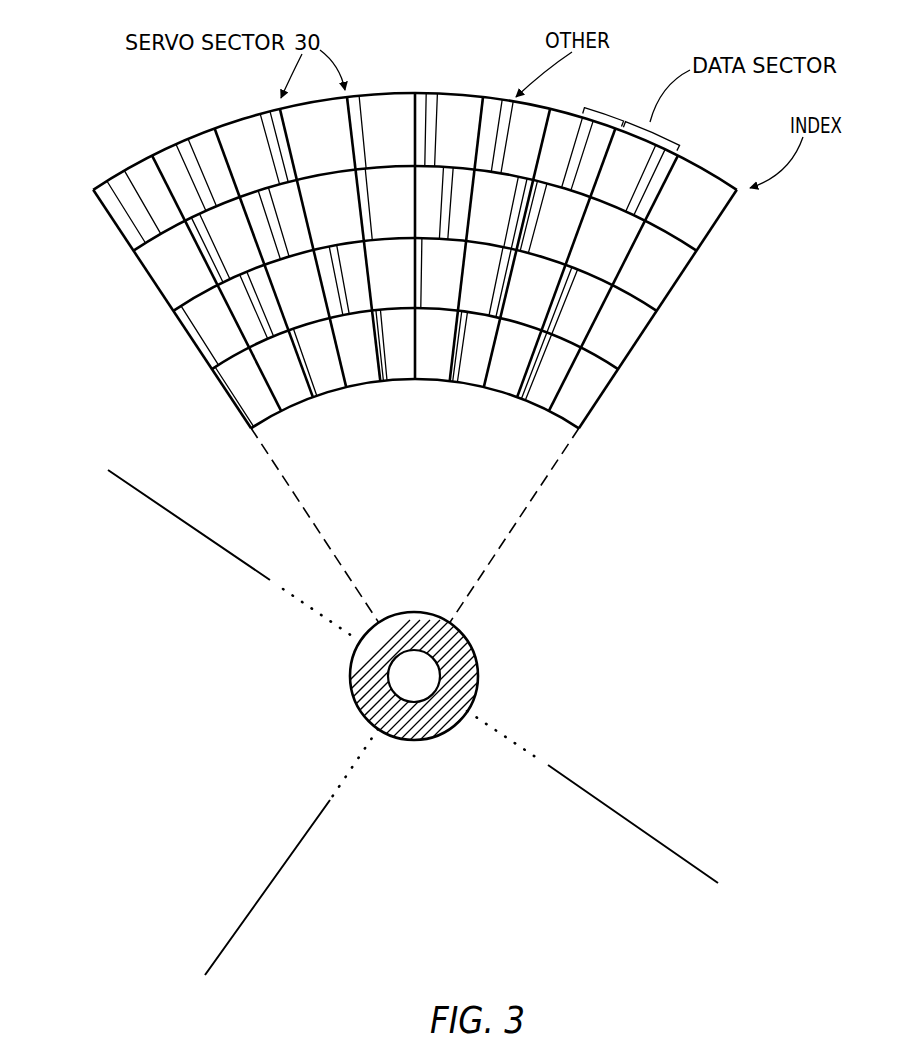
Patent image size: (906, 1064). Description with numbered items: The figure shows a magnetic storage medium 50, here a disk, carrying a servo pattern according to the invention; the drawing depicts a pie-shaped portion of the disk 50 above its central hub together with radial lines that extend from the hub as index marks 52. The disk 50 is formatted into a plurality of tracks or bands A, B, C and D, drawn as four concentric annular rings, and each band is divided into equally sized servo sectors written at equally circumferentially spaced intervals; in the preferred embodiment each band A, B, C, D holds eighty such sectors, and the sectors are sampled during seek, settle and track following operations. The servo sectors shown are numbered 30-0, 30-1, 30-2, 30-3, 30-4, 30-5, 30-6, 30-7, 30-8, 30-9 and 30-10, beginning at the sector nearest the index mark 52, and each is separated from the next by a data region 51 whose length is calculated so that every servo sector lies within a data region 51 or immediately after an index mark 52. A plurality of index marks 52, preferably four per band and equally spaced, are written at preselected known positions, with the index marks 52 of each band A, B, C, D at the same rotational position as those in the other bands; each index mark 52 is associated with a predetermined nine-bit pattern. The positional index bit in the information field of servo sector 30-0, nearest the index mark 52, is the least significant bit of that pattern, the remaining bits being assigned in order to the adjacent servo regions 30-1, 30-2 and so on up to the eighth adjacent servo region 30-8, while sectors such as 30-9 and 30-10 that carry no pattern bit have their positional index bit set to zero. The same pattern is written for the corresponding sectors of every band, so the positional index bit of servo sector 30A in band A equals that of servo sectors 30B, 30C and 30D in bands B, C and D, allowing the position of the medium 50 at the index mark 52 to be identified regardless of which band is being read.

The servo sector 30-0 is at (745, 193).
The first adjacent servo region 30-1 is at (681, 156).
The second adjacent servo region 30-2 is at (626, 118).
The servo sector 30-3 is at (554, 106).
The servo sector 30-4 is at (486, 96).
The servo sector 30-5 is at (432, 92).
The servo sector 30-6 is at (352, 95).
The servo sector 30-7 is at (313, 248).
The eighth adjacent servo region 30-8 is at (214, 122).
The servo sector 30-9 is at (153, 154).
The servo sector 30-10 is at (93, 188).
The servo sector 30A is at (723, 226).
The servo sector 30B is at (692, 270).
The servo sector 30C is at (624, 340).
The servo sector 30D is at (598, 412).
The magnetic storage medium 50 is at (480, 695).
The data region 51 is at (388, 112).
The index mark 52 is at (648, 346).
The band A is at (223, 397).
The band B is at (190, 345).
The band C is at (135, 273).
The band D is at (97, 214).